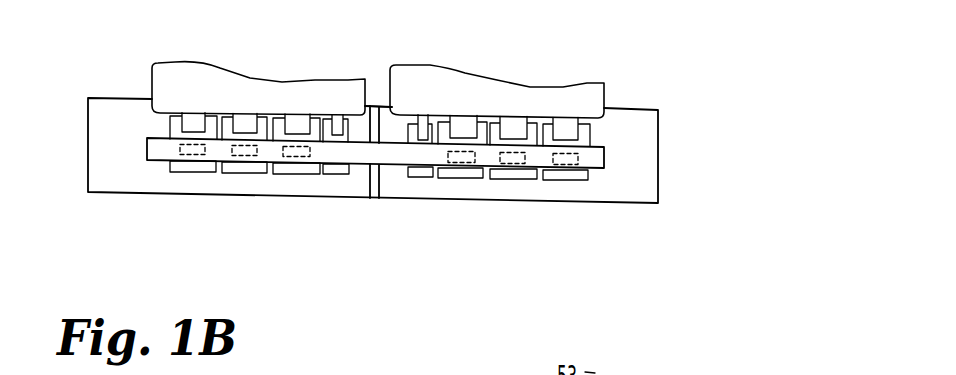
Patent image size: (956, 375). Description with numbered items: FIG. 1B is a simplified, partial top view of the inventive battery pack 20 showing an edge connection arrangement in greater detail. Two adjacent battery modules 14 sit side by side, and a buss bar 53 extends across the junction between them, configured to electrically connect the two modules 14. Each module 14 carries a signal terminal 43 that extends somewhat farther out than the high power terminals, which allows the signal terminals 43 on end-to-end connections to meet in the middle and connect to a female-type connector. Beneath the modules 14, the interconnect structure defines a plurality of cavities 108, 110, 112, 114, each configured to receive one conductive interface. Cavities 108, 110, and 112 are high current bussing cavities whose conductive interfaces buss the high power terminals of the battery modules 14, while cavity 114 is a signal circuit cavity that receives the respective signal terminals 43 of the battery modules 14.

The battery module 14 is at (177, 82).
The packaged assembly 20 is at (78, 165).
The signal terminal 43 is at (345, 130).
The buss bar 53 is at (364, 157).
The cavity 108 is at (280, 173).
The cavity 110 is at (252, 173).
The cavity 112 is at (190, 170).
The cavity 114 is at (333, 175).